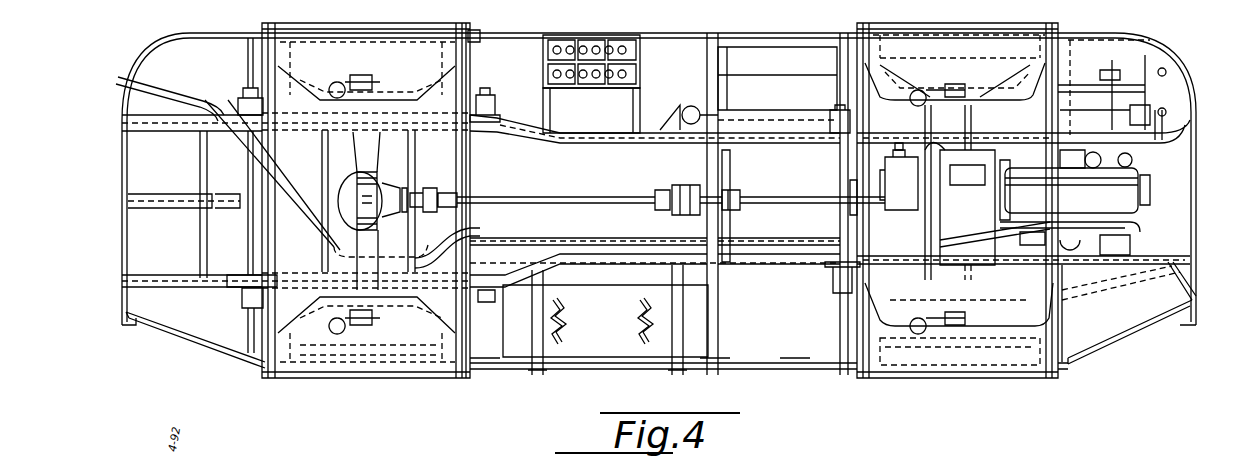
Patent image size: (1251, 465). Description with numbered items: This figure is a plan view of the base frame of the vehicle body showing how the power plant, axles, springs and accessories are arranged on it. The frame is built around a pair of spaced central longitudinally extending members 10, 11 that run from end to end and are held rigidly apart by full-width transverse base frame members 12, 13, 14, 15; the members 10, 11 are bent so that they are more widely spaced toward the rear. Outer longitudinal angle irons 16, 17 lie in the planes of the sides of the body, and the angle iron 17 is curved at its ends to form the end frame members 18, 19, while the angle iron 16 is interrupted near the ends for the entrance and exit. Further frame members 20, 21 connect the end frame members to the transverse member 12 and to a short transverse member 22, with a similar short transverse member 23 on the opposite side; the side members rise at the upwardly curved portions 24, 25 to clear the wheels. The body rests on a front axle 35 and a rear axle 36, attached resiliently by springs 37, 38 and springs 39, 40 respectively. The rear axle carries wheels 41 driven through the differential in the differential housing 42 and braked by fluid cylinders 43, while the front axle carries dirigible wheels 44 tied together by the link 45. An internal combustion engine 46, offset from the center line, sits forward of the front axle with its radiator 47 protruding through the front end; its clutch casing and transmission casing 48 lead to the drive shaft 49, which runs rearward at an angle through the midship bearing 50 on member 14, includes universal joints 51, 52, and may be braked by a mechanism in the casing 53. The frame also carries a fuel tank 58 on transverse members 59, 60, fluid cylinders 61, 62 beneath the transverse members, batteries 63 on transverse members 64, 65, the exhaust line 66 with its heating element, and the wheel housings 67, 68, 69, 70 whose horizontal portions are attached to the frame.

The longitudinally extending member 10 is at (193, 122).
The longitudinally extending member 11 is at (160, 278).
The transverse base frame member 12 is at (268, 258).
The transverse base frame member 13 is at (470, 175).
The transverse base frame member 14 is at (726, 170).
The transverse base frame member 15 is at (850, 192).
The angle iron 16 is at (775, 362).
The angle iron 17 is at (760, 42).
The end frame member 18 is at (1196, 170).
The end frame member 19 is at (128, 182).
The frame member 20 is at (205, 338).
The frame member 21 is at (1145, 330).
The short transverse member 22 is at (1068, 320).
The short transverse member 23 is at (1055, 82).
The upwardly curved portion 24 is at (405, 372).
The upwardly curved portion 25 is at (1000, 368).
The axle 35 is at (955, 237).
The axle 36 is at (380, 165).
The spring 37 is at (833, 283).
The spring 38 is at (830, 122).
The spring 39 is at (470, 90).
The spring 40 is at (242, 298).
The wheel 41 is at (405, 45).
The differential housing 42 is at (358, 200).
The fluid cylinder 43 is at (345, 88).
The wheel 44 is at (1005, 45).
The link 45 is at (905, 215).
The internal combustion engine 46 is at (1130, 190).
The radiator 47 is at (990, 192).
The transmission casing 48 is at (1000, 228).
The drive shaft 49 is at (610, 195).
The midship bearing 50 is at (732, 204).
The universal joint 51 is at (425, 210).
The universal joint 52 is at (690, 178).
The casing 53 is at (896, 168).
The fuel tank 58 is at (660, 345).
The transverse member 59 is at (537, 368).
The transverse member 60 is at (683, 278).
The fluid cylinder 61 is at (720, 50).
The fluid cylinder 62 is at (710, 92).
The battery 63 is at (592, 45).
The transverse member 64 is at (548, 116).
The transverse member 65 is at (635, 110).
The exhaust line 66 is at (580, 240).
The wheel housing 67 is at (472, 280).
The wheel housing 68 is at (478, 32).
The wheel housing 69 is at (1060, 55).
The wheel housing 70 is at (1030, 350).